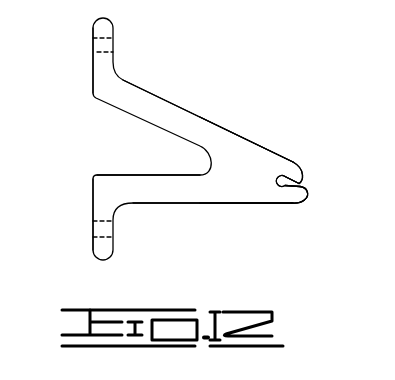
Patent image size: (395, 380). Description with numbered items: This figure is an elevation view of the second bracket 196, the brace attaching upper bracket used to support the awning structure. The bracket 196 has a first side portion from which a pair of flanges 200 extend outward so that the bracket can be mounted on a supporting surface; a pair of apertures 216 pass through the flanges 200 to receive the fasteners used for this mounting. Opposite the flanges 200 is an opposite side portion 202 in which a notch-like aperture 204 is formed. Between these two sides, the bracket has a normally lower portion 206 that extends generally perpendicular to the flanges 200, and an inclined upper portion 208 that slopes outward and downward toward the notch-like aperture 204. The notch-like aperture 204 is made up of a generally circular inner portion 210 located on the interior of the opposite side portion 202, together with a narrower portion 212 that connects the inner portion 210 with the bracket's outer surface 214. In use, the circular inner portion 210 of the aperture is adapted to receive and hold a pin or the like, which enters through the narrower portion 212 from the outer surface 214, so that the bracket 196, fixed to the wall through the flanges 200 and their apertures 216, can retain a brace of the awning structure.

The second bracket 196 is at (274, 82).
The flanges 200 is at (102, 75).
The opposite side portion 202 is at (248, 148).
The notch-like aperture 204 is at (305, 183).
The lower portion 206 is at (195, 197).
The inclined upper portion 208 is at (177, 110).
The inner portion 210 is at (301, 185).
The narrower portion 212 is at (309, 194).
The outer surface 214 is at (305, 163).
The apertures 216 is at (113, 50).